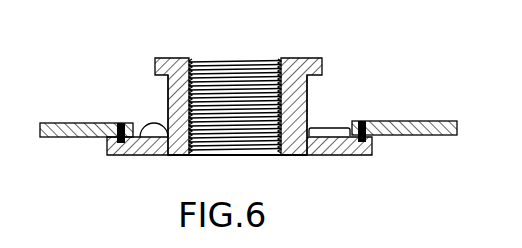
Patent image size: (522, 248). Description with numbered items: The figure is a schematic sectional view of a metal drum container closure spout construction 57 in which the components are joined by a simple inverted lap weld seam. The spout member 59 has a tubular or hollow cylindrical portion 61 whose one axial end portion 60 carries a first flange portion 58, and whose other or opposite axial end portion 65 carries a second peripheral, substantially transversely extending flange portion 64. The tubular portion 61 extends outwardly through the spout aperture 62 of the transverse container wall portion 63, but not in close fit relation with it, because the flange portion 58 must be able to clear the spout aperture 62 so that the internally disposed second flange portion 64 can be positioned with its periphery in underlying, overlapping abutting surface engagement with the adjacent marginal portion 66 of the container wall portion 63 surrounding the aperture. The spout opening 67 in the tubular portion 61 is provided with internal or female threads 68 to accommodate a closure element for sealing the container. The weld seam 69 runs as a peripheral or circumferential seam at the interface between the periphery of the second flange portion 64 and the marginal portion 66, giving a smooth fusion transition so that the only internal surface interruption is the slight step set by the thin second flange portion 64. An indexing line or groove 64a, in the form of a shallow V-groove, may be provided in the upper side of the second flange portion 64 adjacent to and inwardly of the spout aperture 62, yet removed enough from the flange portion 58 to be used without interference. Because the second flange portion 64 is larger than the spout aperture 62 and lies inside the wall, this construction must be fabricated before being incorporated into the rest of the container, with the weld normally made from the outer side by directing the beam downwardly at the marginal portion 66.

The closure spout construction 57 is at (211, 99).
The flange portion 58 is at (313, 58).
The spout member 59 is at (172, 58).
The axial end portion 60 is at (307, 89).
The tubular portion 61 is at (168, 100).
The spout aperture 62 is at (345, 128).
The container wall portion 63 is at (404, 125).
The second flange portion 64 is at (239, 148).
The indexing line or groove 64a is at (173, 156).
The opposite axial end portion 65 is at (306, 153).
The marginal portion 66 is at (92, 138).
The spout opening 67 is at (227, 88).
The internal threads 68 is at (264, 143).
The weld seam 69 is at (373, 137).